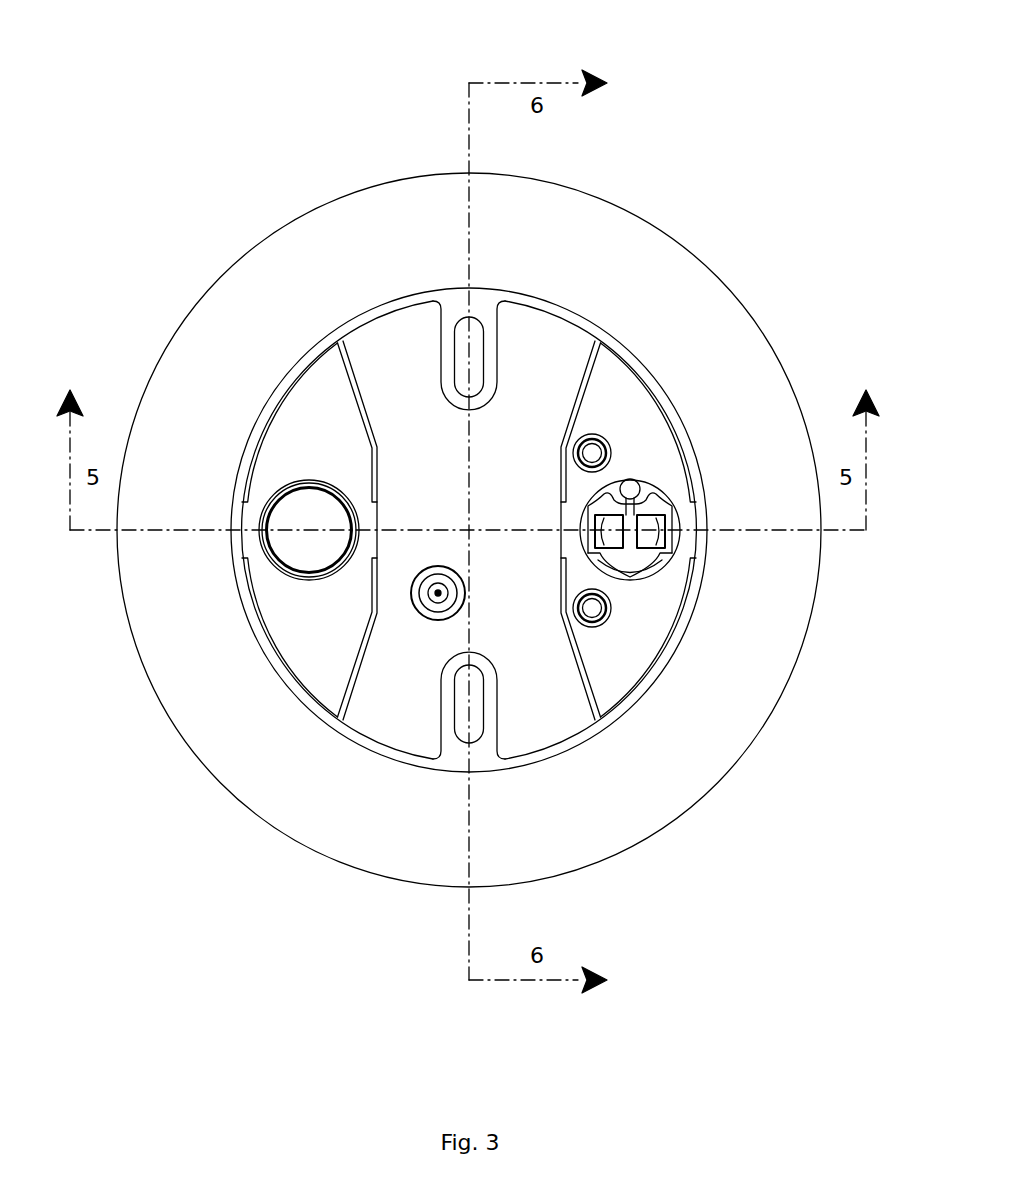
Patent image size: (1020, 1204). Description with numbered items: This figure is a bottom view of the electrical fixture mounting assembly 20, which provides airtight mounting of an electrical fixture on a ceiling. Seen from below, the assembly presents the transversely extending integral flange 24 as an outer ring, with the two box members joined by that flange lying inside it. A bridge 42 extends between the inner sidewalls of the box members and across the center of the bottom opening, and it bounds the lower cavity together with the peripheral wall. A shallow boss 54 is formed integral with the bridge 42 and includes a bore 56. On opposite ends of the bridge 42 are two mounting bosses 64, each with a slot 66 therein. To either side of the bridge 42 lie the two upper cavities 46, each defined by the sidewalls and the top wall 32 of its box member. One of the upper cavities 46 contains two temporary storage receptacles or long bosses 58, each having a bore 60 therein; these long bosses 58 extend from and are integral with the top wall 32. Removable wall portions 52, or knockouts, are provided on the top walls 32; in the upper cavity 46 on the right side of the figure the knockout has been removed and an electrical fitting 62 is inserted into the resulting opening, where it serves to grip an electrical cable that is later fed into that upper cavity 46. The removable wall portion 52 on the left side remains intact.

The electrical fixture mounting assembly 20 is at (192, 220).
The integral flange 24 is at (278, 306).
The top wall 32 is at (301, 450).
The bridge 42 is at (412, 481).
The upper cavity 46 is at (280, 453).
The removable wall portion 52 is at (298, 558).
The shallow boss 54 is at (462, 612).
The bore 56 is at (440, 592).
The long boss 58 is at (609, 458).
The bore 60 is at (592, 453).
The electrical fitting 62 is at (676, 522).
The mounting boss 64 is at (498, 350).
The slot 66 is at (468, 355).